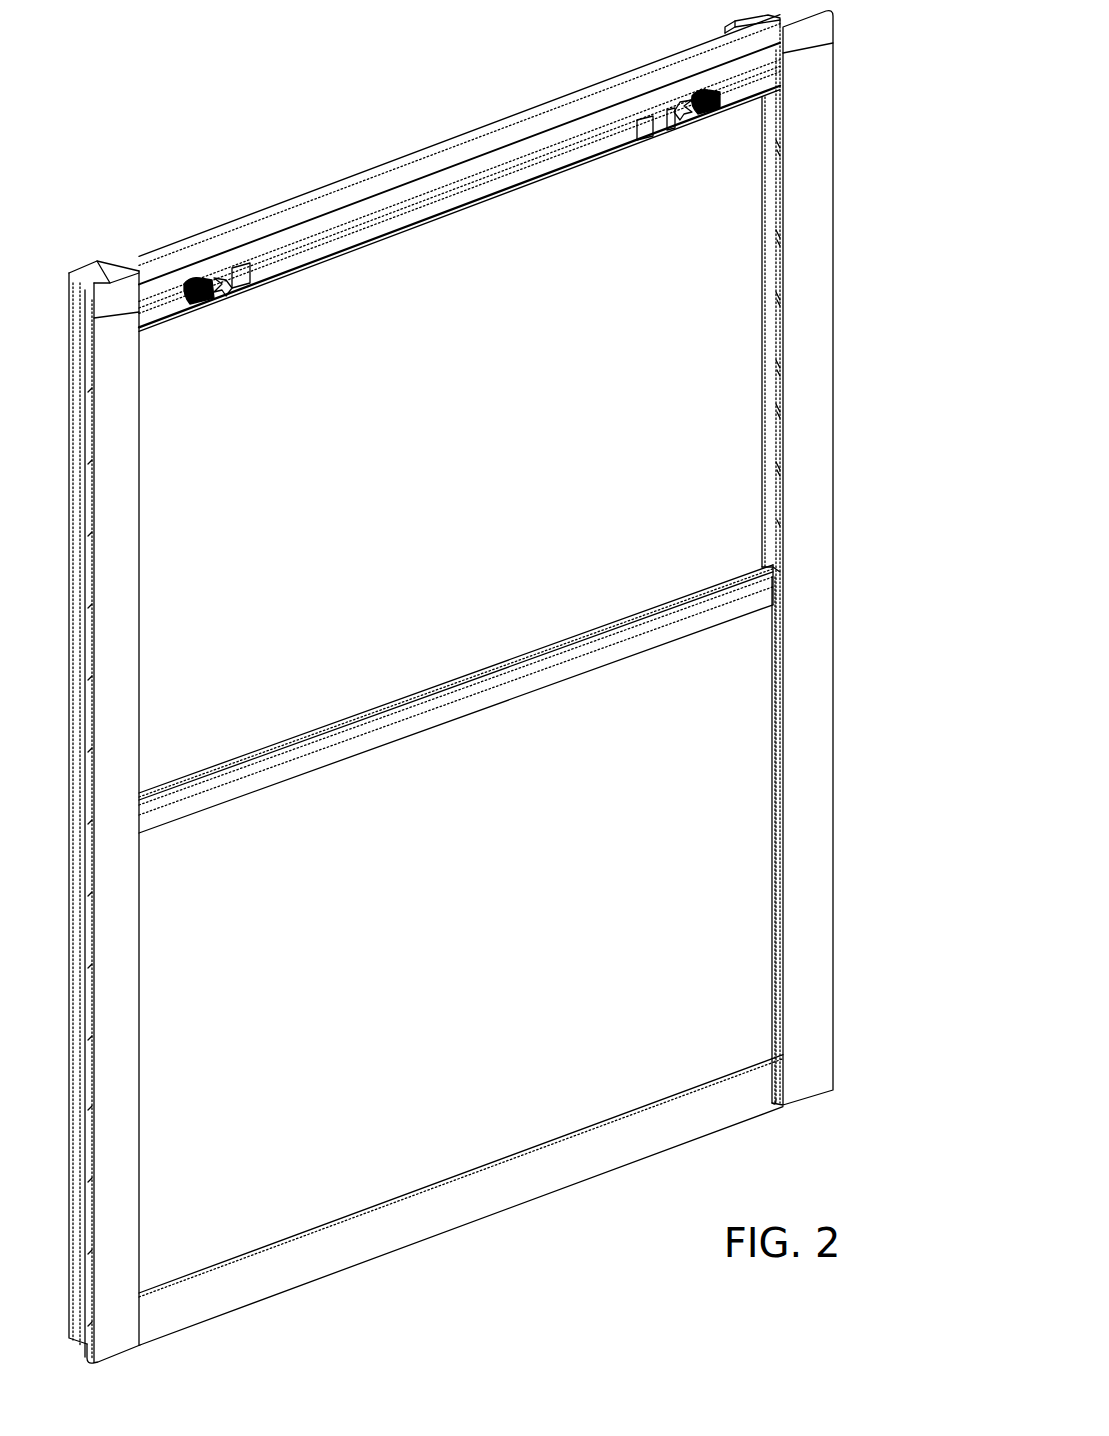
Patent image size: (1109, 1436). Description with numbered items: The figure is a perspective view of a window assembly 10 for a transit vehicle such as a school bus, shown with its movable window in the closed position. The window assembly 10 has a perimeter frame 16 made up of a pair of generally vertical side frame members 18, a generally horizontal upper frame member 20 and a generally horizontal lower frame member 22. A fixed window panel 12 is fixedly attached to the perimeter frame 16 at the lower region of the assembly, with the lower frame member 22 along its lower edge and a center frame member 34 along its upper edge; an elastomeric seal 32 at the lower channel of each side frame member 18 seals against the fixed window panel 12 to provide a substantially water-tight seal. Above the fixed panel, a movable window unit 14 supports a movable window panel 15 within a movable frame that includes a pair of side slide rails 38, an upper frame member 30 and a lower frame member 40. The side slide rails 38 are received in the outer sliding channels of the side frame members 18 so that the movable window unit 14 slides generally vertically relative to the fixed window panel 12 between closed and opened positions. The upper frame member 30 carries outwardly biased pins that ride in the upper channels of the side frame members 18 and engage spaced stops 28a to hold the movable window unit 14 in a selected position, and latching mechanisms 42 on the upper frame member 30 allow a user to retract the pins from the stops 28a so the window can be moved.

The window assembly 10 is at (526, 683).
The fixed window panel 12 is at (718, 935).
The movable window unit 14 is at (338, 276).
The movable window panel 15 is at (668, 475).
The perimeter frame 16 is at (495, 683).
The side frame members 18 is at (828, 268).
The upper frame member 20 is at (443, 145).
The lower frame member 22 is at (488, 1195).
The stops 28a is at (785, 370).
The upper frame member of the movable frame 30 is at (475, 190).
The elastomeric seal 32 is at (770, 665).
The center frame member 34 is at (525, 690).
The side slide rails 38 is at (766, 187).
The lower frame member of the movable frame 40 is at (438, 685).
The latching mechanism 42 is at (710, 108).